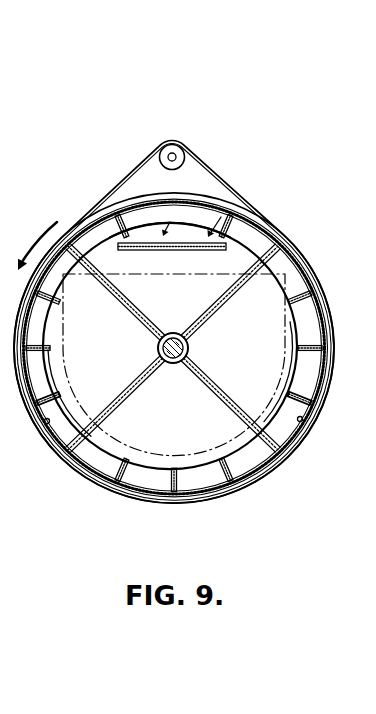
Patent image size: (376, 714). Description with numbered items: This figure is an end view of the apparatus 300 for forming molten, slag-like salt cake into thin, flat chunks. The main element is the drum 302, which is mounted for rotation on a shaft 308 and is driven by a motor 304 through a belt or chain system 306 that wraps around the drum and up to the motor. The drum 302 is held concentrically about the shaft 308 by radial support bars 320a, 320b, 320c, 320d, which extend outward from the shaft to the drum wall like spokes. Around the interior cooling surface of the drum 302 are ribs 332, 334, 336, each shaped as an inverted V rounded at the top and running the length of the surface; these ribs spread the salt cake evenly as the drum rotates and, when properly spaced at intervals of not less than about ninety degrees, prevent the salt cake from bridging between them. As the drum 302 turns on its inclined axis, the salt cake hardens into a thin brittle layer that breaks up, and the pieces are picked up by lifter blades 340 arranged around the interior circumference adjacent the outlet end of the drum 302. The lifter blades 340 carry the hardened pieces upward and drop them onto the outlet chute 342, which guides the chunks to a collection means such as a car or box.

The apparatus 300 is at (266, 138).
The drum 302 is at (130, 196).
The motor 304 is at (171, 139).
The belt or chain system 306 is at (241, 198).
The shaft 308 is at (158, 348).
The radial support bar 320a is at (137, 306).
The radial support bar 320b is at (208, 318).
The radial support bar 320c is at (205, 376).
The radial support bar 320d is at (131, 394).
The rib 332 is at (163, 212).
The rib 334 is at (298, 417).
The rib 336 is at (49, 419).
The lifter blades 340 is at (48, 350).
The outlet chute 342 is at (218, 262).